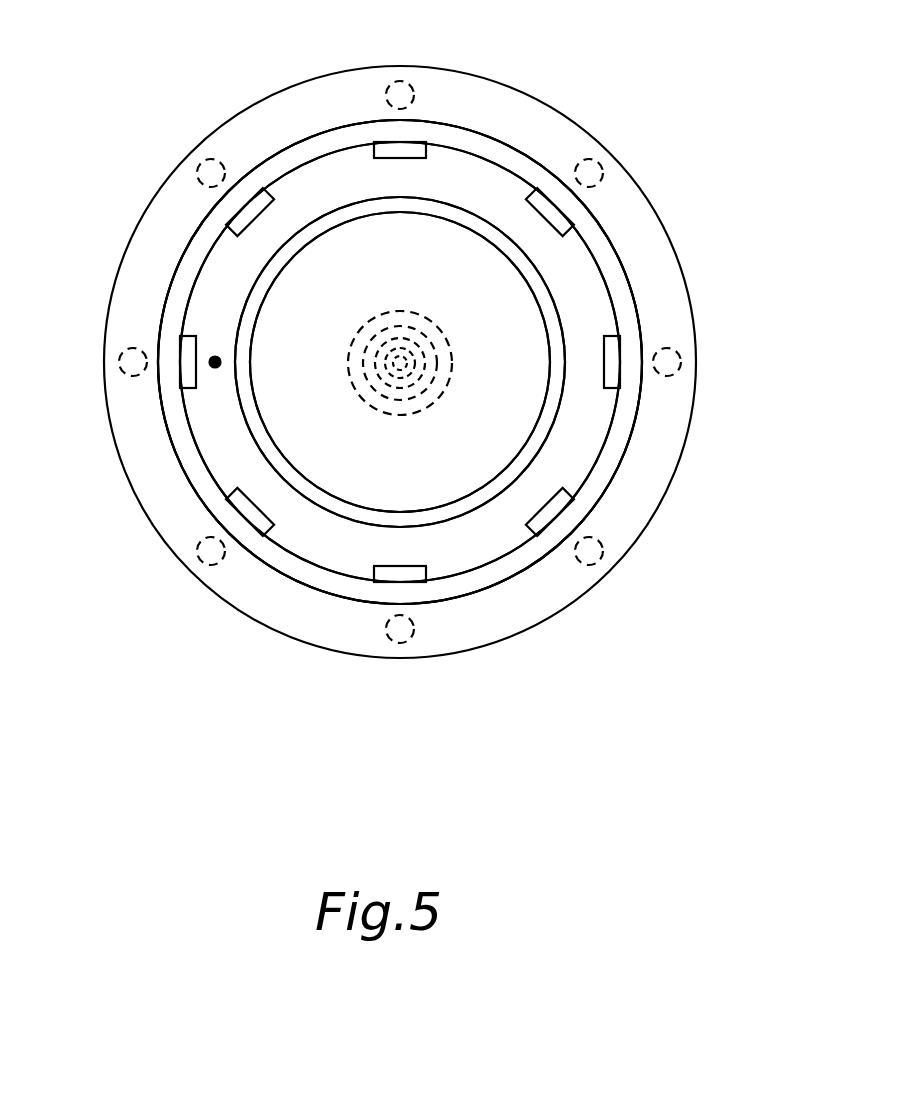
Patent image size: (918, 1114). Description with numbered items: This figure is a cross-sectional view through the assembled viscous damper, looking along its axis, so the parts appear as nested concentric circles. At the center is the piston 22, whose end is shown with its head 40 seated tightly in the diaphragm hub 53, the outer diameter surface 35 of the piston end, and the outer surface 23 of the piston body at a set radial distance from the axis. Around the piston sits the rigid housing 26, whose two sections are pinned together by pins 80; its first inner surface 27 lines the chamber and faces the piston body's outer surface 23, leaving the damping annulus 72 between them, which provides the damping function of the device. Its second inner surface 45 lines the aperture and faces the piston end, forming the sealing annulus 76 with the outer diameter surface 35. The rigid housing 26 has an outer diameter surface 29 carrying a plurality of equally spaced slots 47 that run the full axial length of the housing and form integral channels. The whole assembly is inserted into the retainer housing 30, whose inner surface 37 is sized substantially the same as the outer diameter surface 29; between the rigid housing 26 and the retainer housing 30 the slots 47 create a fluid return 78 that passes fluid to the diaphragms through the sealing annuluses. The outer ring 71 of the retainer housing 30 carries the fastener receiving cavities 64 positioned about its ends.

The piston 22 is at (400, 362).
The outer surface 23 is at (552, 430).
The rigid housing 26 is at (400, 362).
The first inner surface 27 is at (558, 405).
The outer diameter surface 29 is at (535, 567).
The retainer housing 30 is at (287, 565).
The outer diameter surface 35 is at (380, 373).
The inner surface 37 is at (203, 228).
The head 40 is at (404, 359).
The second inner surface 45 is at (409, 333).
The slots 47 is at (392, 155).
The diaphragm hub 53 is at (372, 318).
The fastener receiving cavities 64 is at (207, 156).
The outer ring 71 is at (172, 493).
The damping annulus 72 is at (380, 523).
The sealing annulus 76 is at (412, 392).
The fluid return 78 is at (213, 210).
The pins 80 is at (215, 356).